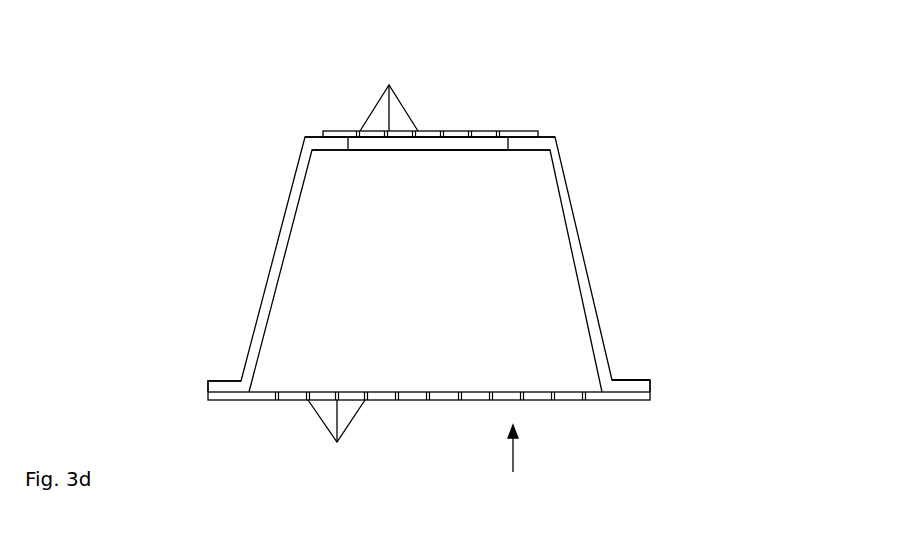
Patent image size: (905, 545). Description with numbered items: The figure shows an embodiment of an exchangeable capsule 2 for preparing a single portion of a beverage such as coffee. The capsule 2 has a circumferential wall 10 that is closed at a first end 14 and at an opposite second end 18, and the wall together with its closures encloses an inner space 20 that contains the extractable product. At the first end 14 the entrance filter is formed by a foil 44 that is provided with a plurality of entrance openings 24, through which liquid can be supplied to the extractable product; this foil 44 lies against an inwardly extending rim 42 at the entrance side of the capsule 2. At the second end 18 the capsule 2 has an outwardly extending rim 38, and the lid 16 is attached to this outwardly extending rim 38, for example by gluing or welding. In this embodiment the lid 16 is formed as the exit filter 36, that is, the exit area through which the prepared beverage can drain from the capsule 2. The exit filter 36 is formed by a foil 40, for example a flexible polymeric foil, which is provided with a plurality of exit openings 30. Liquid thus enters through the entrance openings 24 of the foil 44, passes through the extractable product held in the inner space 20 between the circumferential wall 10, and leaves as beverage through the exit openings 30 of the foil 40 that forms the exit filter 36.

The exchangeable capsule 2 is at (480, 281).
The circumferential wall 10 is at (582, 270).
The first end 14 is at (555, 150).
The lid 16 is at (598, 400).
The second end 18 is at (605, 373).
The inner space 20 is at (336, 230).
The entrance openings 24 is at (389, 94).
The exit openings 30 is at (336, 436).
The exit filter 36 is at (514, 464).
The outwardly extending rim 38 is at (638, 387).
The foil 40 is at (255, 400).
The inwardly extending rim 42 is at (545, 143).
The foil 44 is at (523, 132).